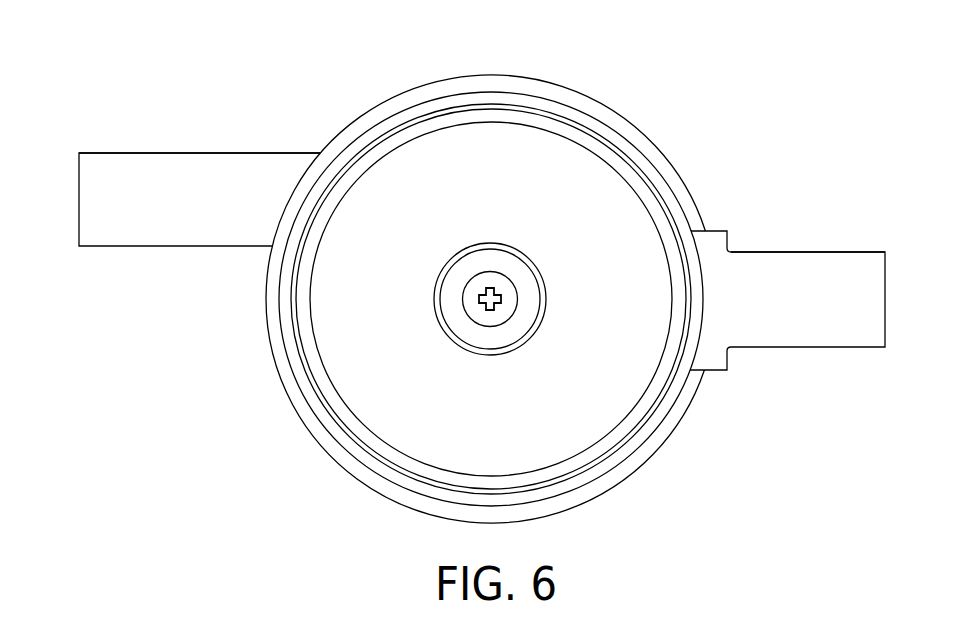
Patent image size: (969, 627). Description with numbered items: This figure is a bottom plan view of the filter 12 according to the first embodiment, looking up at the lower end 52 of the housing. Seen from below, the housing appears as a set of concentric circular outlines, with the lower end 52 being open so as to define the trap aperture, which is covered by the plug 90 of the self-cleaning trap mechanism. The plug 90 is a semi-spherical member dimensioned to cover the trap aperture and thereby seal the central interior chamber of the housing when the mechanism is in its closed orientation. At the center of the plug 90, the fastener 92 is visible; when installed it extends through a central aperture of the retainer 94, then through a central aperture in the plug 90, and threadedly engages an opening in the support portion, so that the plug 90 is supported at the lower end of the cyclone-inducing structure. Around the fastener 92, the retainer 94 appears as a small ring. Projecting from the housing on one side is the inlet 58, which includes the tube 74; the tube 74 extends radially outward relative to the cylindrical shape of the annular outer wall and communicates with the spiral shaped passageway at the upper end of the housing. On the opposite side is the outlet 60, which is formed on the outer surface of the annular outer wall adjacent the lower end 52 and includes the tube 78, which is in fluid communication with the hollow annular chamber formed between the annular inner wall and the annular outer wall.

The filter assembly 12 is at (227, 445).
The lower end 52 is at (412, 97).
The inlet 58 is at (79, 212).
The outlet 60 is at (789, 315).
The tube 74 is at (143, 185).
The tube 78 is at (843, 277).
The plug 90 is at (598, 190).
The fastener 92 is at (475, 313).
The retainer 94 is at (513, 330).